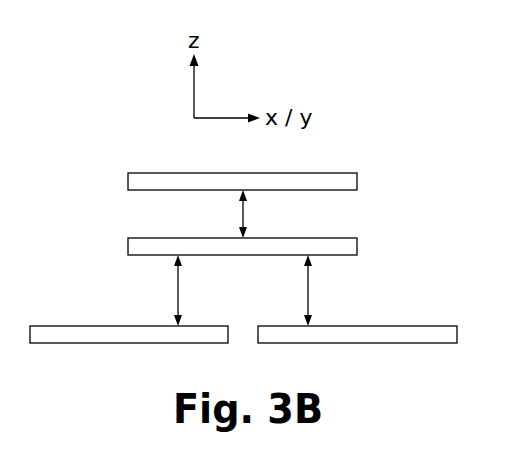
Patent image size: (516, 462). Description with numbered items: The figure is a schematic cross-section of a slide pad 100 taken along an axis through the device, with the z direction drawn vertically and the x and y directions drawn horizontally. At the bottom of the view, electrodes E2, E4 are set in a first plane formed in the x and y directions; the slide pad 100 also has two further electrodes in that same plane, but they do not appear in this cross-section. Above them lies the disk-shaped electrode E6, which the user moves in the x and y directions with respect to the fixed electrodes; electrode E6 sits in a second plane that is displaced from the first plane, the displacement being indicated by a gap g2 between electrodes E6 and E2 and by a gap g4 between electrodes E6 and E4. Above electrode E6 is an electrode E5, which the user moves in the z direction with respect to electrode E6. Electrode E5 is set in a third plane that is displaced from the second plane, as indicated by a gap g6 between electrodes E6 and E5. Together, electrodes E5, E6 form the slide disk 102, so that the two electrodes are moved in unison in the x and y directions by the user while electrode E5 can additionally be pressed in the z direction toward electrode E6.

The slide pad 100 is at (340, 134).
The slide disk 102 is at (363, 172).
The electrode E5 is at (128, 181).
The disk-shaped electrode E6 is at (128, 246).
The electrode E2 is at (82, 343).
The electrode E4 is at (395, 343).
The gap g6 is at (257, 214).
The gap g2 is at (165, 290).
The gap g4 is at (320, 290).